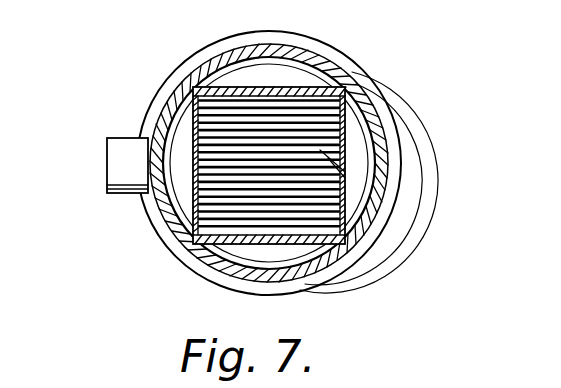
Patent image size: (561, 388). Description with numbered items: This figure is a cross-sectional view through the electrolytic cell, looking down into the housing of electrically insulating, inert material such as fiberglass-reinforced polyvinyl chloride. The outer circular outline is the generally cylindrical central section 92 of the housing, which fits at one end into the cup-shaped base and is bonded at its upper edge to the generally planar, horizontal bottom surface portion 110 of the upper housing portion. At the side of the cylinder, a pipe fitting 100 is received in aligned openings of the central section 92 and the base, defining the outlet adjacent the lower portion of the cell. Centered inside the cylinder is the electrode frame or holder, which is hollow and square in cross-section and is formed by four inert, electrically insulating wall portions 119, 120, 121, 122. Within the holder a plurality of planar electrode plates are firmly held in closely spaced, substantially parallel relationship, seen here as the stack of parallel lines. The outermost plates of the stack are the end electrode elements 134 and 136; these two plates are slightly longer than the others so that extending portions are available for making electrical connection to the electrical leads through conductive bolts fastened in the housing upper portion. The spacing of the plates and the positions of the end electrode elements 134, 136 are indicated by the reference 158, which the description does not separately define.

The central section 92 is at (160, 223).
The pipe fitting 100 is at (123, 138).
The bottom surface portion 110 is at (362, 194).
The wall portion 119 is at (310, 87).
The wall portion 120 is at (221, 284).
The wall portion 121 is at (186, 116).
The wall portion 122 is at (390, 110).
The end electrode element 134 is at (318, 281).
The end electrode element 136 is at (236, 88).
The laminations 158 is at (352, 163).